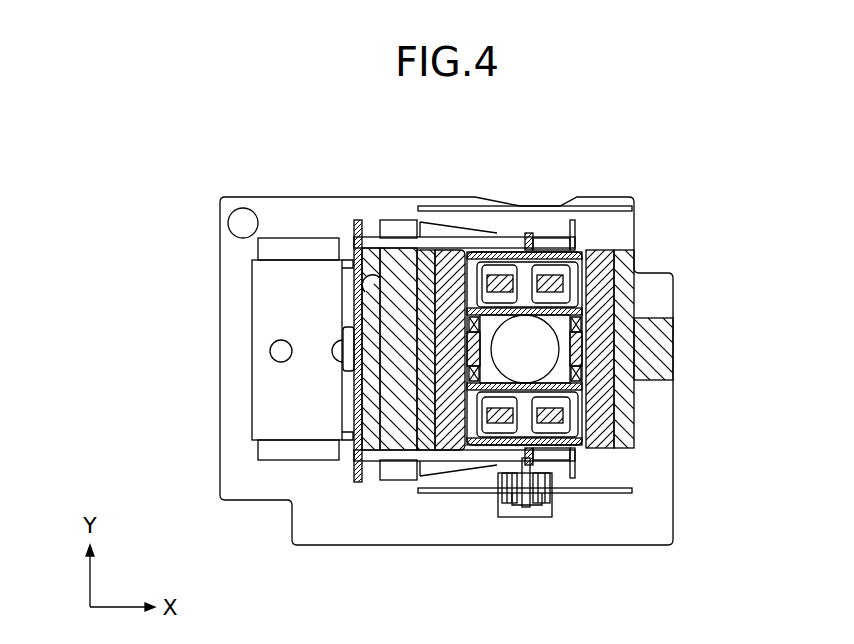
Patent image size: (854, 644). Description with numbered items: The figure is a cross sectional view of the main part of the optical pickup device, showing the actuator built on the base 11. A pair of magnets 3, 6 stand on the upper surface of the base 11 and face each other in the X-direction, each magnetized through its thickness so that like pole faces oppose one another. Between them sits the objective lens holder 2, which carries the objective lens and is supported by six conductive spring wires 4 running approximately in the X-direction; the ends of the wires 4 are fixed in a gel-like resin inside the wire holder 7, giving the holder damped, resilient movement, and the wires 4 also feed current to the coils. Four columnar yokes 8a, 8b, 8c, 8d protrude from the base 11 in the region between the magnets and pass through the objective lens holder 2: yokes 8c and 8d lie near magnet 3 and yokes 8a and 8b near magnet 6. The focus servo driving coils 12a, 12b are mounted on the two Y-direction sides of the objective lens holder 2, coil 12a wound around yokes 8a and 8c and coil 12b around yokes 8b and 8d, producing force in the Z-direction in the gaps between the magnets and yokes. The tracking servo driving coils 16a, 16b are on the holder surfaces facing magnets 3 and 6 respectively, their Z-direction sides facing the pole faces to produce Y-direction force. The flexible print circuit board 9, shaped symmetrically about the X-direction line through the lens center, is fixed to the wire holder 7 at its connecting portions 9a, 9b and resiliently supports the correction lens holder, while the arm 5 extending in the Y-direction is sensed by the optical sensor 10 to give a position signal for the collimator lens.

The objective lens holder 2 is at (617, 317).
The magnet 3 is at (603, 257).
The wires 4 is at (560, 212).
The arm 5 is at (530, 472).
The magnet 6 is at (423, 250).
The wire holder 7 is at (397, 258).
The yoke 8a is at (490, 277).
The yoke 8b is at (500, 420).
The yoke 8c is at (557, 277).
The yoke 8d is at (560, 418).
The flexible print circuit board 9 is at (482, 470).
The connecting portion 9a is at (452, 250).
The connecting portion 9b is at (478, 462).
The optical sensor 10 is at (532, 515).
The base 11 is at (653, 523).
The focus servo driving coil 12a is at (508, 262).
The focus servo driving coil 12b is at (500, 445).
The tracking servo driving coil 16a is at (574, 376).
The tracking servo driving coil 16b is at (468, 368).